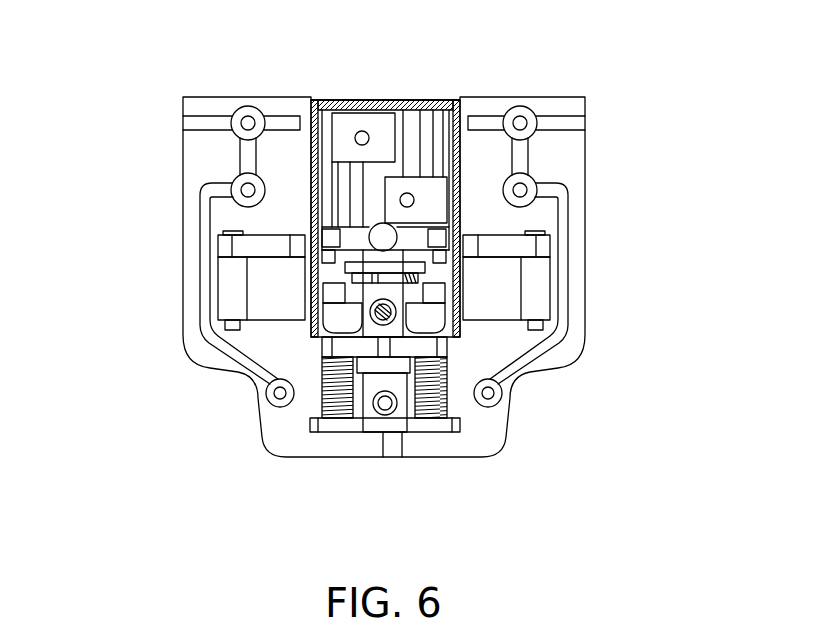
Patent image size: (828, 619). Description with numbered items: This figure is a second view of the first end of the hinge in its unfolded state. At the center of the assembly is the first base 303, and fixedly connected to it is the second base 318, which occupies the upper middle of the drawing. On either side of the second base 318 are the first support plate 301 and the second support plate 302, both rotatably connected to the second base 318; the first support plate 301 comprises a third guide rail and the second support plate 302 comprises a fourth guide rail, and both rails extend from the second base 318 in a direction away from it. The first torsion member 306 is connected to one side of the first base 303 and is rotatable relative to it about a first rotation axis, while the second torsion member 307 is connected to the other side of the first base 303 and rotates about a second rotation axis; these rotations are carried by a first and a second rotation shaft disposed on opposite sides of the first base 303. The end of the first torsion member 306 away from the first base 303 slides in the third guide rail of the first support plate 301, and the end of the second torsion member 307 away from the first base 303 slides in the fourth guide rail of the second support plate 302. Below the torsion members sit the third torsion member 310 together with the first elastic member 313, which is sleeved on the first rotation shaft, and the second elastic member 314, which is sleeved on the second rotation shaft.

The first support plate 301 is at (585, 97).
The second support plate 302 is at (183, 97).
The first base 303 is at (401, 442).
The first torsion member 306 is at (550, 287).
The second torsion member 307 is at (218, 287).
The third torsion member 310 is at (450, 346).
The first elastic member 313 is at (450, 410).
The second elastic member 314 is at (320, 412).
The second base 318 is at (391, 100).